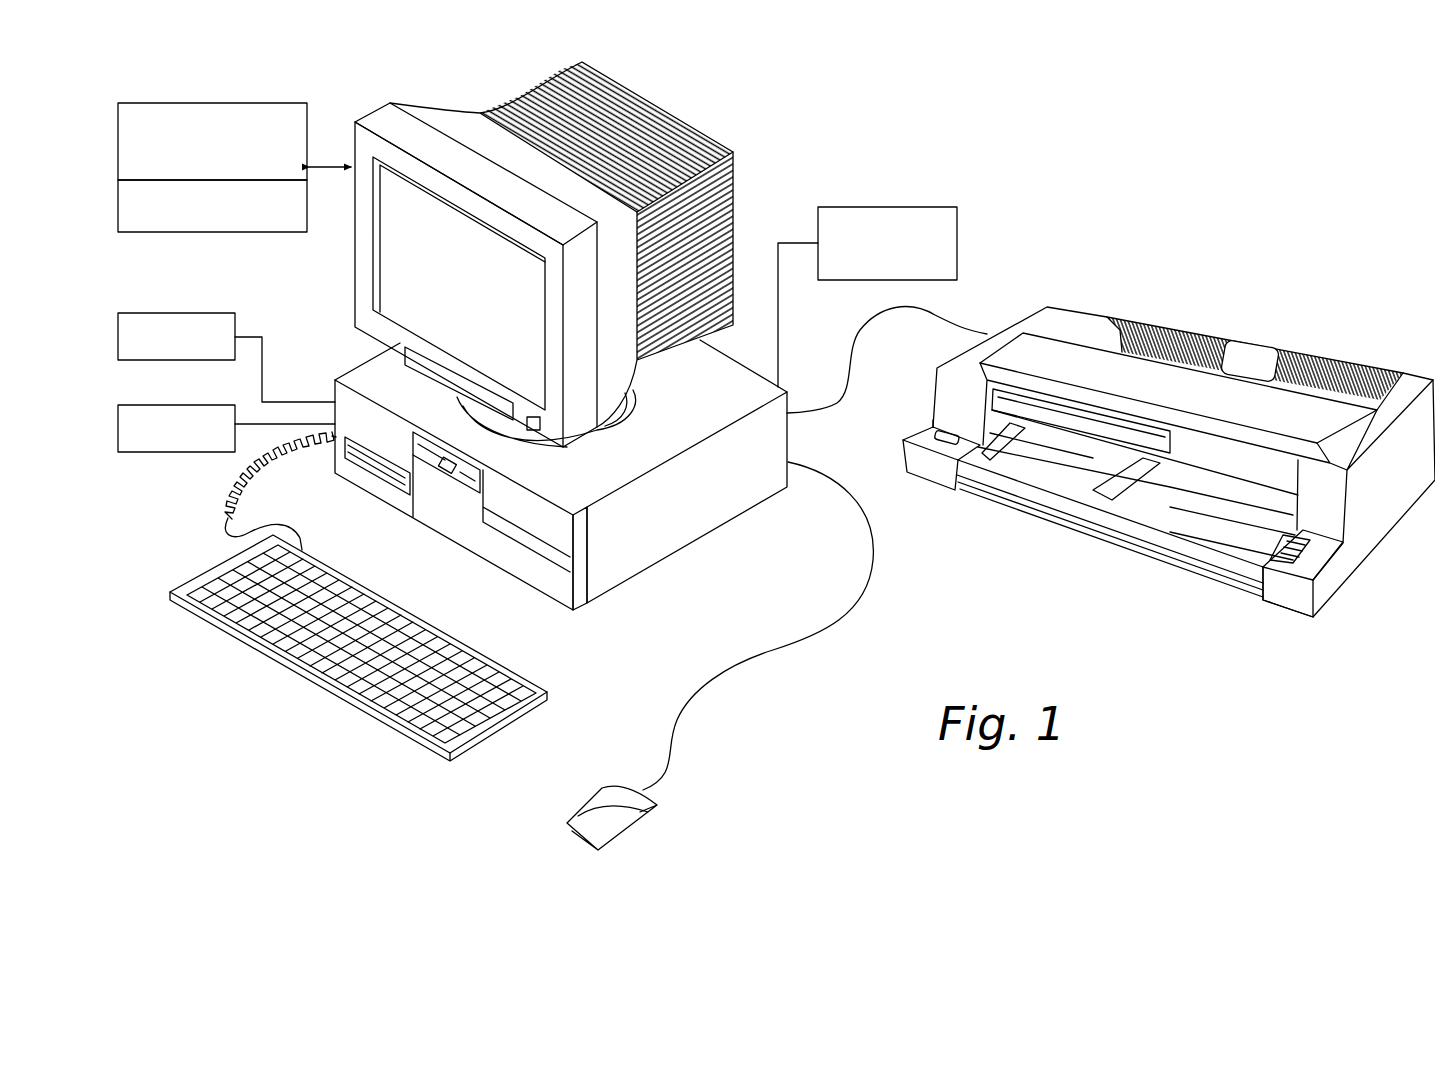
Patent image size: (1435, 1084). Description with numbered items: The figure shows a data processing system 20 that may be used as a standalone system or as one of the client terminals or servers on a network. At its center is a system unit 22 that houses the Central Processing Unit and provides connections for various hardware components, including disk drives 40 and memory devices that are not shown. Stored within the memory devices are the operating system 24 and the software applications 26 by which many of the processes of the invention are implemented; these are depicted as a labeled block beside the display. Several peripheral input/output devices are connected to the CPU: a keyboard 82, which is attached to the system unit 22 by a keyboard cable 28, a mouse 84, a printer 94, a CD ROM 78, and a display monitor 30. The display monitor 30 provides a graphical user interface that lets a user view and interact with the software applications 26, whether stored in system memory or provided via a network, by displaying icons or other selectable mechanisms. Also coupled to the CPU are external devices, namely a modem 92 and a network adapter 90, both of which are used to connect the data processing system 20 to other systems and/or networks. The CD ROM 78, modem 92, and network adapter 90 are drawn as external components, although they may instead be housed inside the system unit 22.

The data processing system 20 is at (940, 105).
The system unit 22 is at (561, 496).
The operating system 24 is at (135, 232).
The software applications 26 is at (135, 103).
The keyboard cable 28 is at (255, 488).
The display monitor 30 is at (480, 294).
The disk drives 40 is at (443, 478).
The CD ROM 78 is at (130, 452).
The keyboard 82 is at (333, 697).
The mouse 84 is at (650, 815).
The network adapter 90 is at (957, 218).
The modem 92 is at (130, 360).
The printer 94 is at (1120, 298).